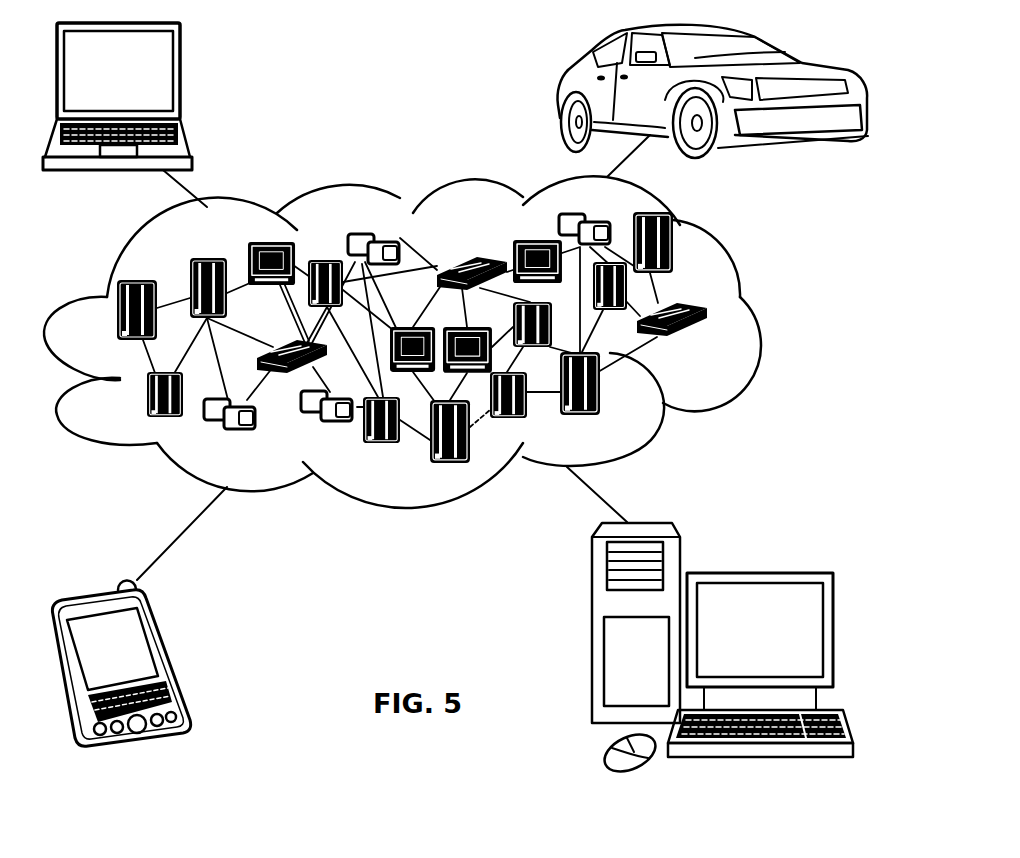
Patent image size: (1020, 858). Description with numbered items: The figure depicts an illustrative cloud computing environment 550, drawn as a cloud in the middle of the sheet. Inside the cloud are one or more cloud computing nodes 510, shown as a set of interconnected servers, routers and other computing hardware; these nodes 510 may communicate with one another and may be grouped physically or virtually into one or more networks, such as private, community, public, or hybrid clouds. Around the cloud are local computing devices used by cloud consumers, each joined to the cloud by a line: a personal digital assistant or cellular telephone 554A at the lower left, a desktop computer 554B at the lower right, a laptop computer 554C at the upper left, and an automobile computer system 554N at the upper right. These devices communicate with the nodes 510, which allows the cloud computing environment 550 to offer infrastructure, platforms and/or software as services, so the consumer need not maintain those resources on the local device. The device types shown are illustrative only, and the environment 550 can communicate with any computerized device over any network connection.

The personal digital assistant or cellular telephone 554A is at (170, 658).
The desktop computer 554B is at (760, 573).
The laptop computer 554C is at (181, 78).
The automobile computer system 554N is at (565, 96).
The cloud computing environment 550 is at (760, 322).
The cloud computing nodes 510 is at (718, 347).